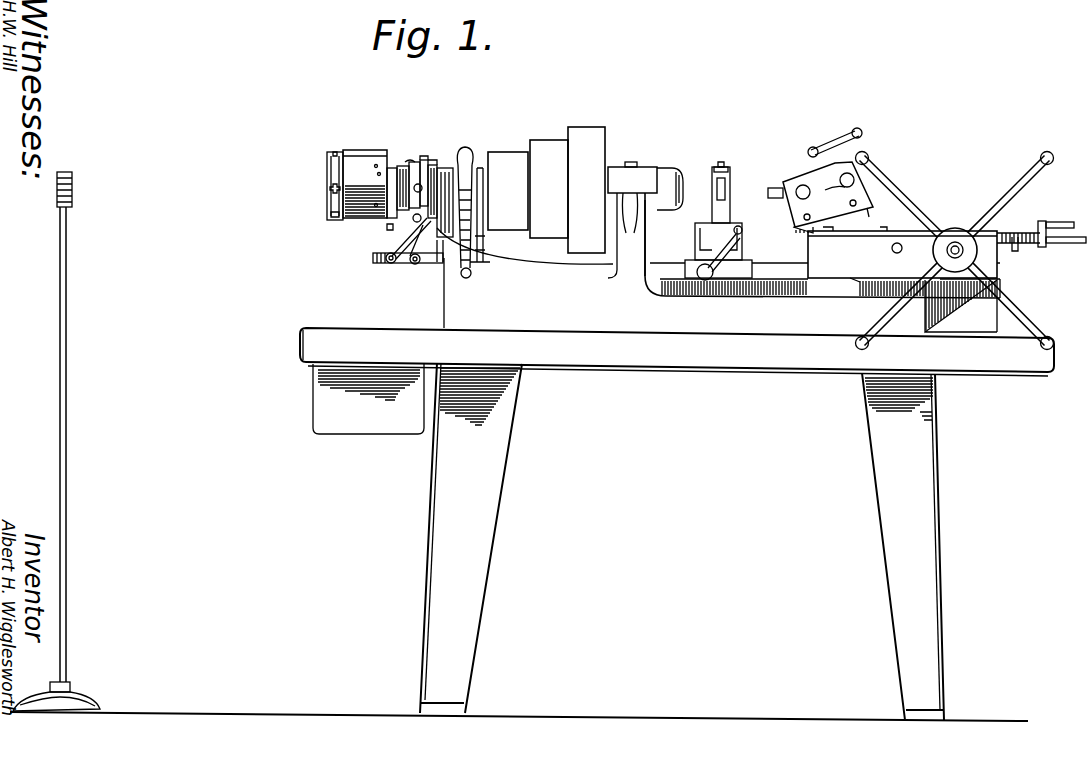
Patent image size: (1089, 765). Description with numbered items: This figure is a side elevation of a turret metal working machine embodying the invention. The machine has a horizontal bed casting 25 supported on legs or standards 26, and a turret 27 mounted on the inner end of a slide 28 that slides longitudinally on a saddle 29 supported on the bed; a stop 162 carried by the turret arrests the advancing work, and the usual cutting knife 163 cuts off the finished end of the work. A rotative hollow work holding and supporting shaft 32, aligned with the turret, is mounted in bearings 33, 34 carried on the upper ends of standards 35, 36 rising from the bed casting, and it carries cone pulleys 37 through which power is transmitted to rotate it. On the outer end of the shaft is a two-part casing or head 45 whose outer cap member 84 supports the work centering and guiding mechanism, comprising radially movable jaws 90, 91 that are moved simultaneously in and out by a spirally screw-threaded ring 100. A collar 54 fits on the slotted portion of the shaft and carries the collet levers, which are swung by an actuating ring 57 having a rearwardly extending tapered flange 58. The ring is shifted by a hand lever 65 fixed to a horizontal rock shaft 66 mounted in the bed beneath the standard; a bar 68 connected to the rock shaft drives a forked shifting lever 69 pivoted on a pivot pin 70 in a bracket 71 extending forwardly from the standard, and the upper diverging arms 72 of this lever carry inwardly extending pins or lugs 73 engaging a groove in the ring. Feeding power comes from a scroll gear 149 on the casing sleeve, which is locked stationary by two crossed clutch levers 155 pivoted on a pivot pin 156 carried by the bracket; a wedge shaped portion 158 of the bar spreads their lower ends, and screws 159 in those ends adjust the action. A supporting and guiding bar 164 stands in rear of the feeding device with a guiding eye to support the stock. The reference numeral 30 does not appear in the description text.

The bed casting 25 is at (737, 323).
The legs or standards 26 is at (488, 473).
The turret 27 is at (787, 183).
The slide 28 is at (950, 207).
The saddle 29 is at (868, 260).
The headstock casing 30 is at (492, 149).
The hollow work holding and work supporting shaft 32 is at (440, 168).
The bearing 33 is at (481, 152).
The bearing 34 is at (657, 180).
The standard 35 is at (476, 238).
The standard 36 is at (647, 254).
The cone pulleys 37 is at (567, 133).
The two-part casing or head 45 is at (362, 160).
The collar 54 is at (426, 165).
The actuating ring 57 is at (419, 183).
The tapered flange 58 is at (413, 162).
The hand lever 65 is at (458, 236).
The rock shaft 66 is at (470, 275).
The bar 68 is at (412, 264).
The forked shifting lever 69 is at (439, 262).
The pivot pin 70 is at (427, 218).
The bracket 71 is at (422, 225).
The diverging arms 72 is at (475, 260).
The pins or lugs 73 is at (432, 178).
The cap member 84 is at (327, 162).
The centering jaw 90 is at (340, 150).
The centering jaw 91 is at (330, 188).
The spirally screw-threaded ring 100 is at (358, 160).
The scroll gear 149 is at (391, 166).
The clutch levers 155 is at (399, 170).
The pivot pin 156 is at (390, 228).
The wedge shaped portion 158 is at (405, 263).
The screws 159 is at (387, 259).
The stop 162 is at (777, 200).
The cutting knife 163 is at (722, 200).
The supporting and guiding bar 164 is at (66, 370).